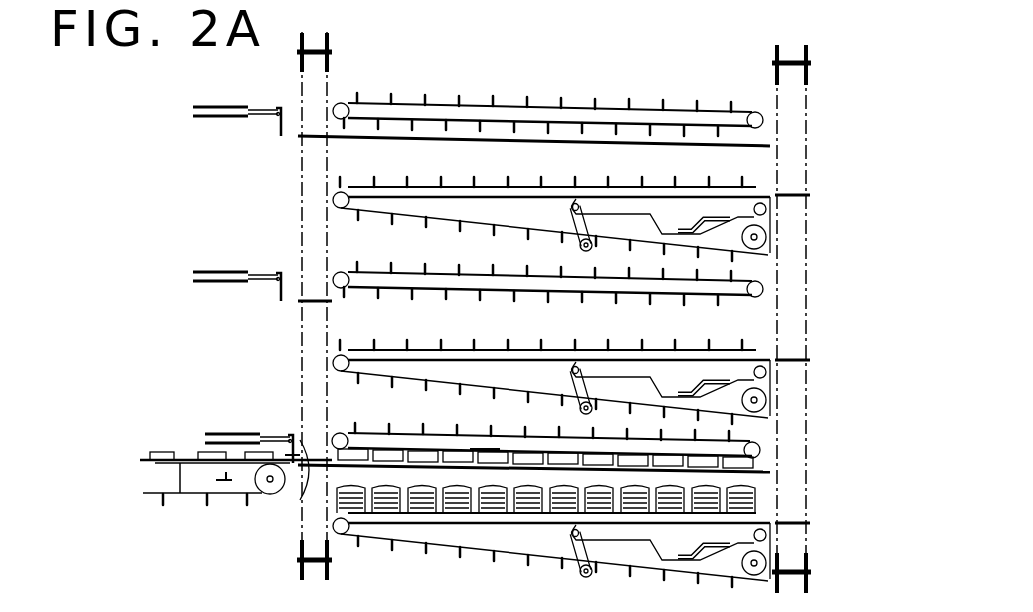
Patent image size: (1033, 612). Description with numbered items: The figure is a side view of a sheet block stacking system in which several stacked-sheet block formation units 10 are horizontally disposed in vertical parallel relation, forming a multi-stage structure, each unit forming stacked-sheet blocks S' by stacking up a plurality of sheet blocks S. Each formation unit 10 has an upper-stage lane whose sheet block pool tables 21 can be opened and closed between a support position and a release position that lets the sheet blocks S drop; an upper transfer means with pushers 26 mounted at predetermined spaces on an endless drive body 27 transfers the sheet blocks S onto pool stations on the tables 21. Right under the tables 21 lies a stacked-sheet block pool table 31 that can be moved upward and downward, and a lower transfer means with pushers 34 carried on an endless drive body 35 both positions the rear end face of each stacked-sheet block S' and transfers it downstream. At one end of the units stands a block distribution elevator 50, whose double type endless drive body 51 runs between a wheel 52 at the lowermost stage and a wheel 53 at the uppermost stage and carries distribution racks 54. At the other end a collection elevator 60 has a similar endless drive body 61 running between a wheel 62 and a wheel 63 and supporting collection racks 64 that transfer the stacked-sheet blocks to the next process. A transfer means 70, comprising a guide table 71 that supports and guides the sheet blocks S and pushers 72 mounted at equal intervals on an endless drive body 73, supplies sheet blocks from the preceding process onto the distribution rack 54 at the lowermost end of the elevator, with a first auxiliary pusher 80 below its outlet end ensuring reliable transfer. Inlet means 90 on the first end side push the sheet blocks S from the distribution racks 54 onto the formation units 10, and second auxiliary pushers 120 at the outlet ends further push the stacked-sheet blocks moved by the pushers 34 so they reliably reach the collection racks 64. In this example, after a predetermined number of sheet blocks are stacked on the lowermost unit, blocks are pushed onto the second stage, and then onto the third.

The stacked-sheet block formation unit 10 is at (812, 185).
The sheet block pool table 21 is at (713, 460).
The pusher 26 is at (422, 450).
The endless drive body 27 is at (376, 432).
The stacked-sheet block pool table 31 is at (688, 507).
The pusher 34 is at (538, 508).
The endless drive body 35 is at (556, 522).
The block distribution elevator 50 is at (336, 31).
The endless drive body 51 is at (302, 158).
The wheel 52 is at (298, 551).
The wheel 53 is at (333, 39).
The distribution rack 54 is at (303, 302).
The collection elevator 60 is at (808, 35).
The endless drive body 61 is at (808, 126).
The wheel 62 is at (808, 584).
The wheel 63 is at (808, 76).
The collection rack 64 is at (792, 200).
The transfer means 70 is at (130, 483).
The guide table 71 is at (197, 460).
The pusher 72 is at (200, 452).
The endless drive body 73 is at (180, 494).
The first auxiliary pusher 80 is at (224, 483).
The inlet means 90 is at (238, 91).
The second auxiliary pusher 120 is at (764, 611).
The sheet block S is at (383, 419).
The stacked-sheet block S' is at (404, 550).